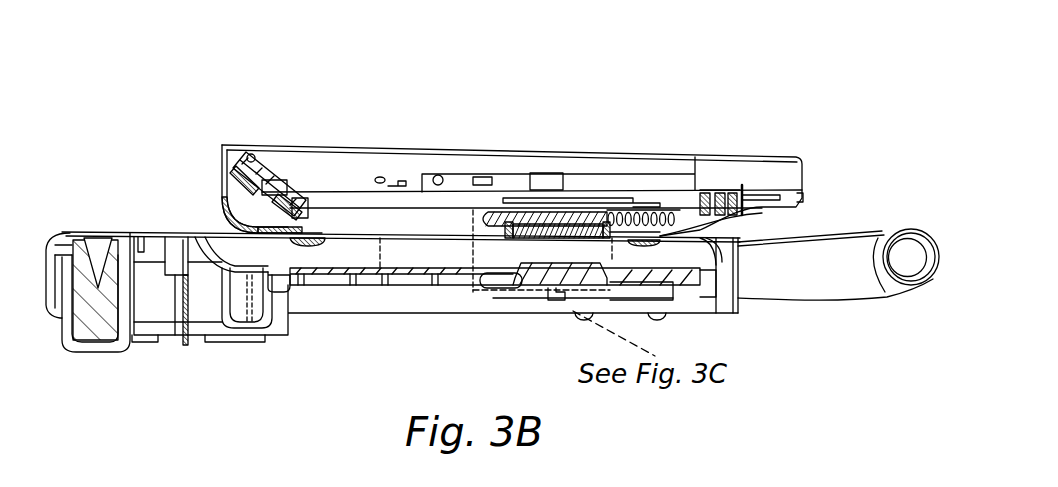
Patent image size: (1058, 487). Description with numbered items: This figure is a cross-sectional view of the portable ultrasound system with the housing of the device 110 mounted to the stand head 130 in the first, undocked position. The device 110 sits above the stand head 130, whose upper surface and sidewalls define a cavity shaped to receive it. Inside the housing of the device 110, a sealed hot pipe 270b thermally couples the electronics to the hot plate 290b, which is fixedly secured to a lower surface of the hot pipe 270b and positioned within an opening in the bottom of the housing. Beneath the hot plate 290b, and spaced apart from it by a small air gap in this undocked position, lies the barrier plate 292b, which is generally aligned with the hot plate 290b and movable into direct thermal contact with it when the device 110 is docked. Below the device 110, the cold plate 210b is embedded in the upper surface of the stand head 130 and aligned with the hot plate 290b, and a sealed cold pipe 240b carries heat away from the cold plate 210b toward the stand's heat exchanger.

The device 110 is at (760, 178).
The stand head 130 is at (760, 273).
The hot pipe 270b is at (490, 217).
The barrier plate 292b is at (528, 232).
The hot plate 290b is at (582, 227).
The cold plate 210b is at (522, 278).
The cold pipe 240b is at (535, 285).